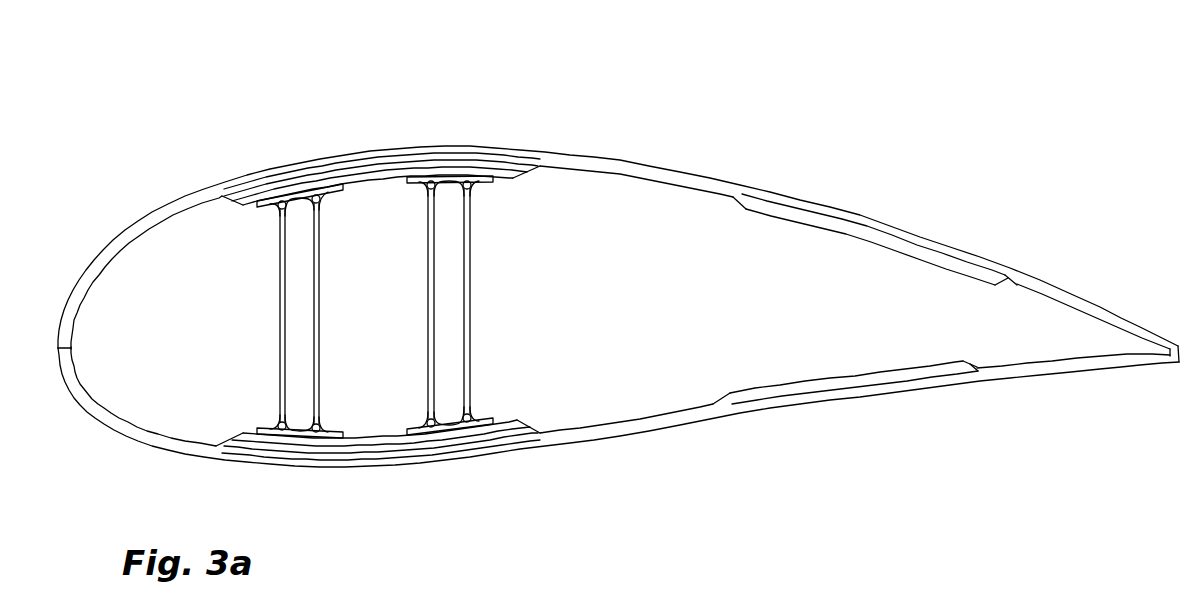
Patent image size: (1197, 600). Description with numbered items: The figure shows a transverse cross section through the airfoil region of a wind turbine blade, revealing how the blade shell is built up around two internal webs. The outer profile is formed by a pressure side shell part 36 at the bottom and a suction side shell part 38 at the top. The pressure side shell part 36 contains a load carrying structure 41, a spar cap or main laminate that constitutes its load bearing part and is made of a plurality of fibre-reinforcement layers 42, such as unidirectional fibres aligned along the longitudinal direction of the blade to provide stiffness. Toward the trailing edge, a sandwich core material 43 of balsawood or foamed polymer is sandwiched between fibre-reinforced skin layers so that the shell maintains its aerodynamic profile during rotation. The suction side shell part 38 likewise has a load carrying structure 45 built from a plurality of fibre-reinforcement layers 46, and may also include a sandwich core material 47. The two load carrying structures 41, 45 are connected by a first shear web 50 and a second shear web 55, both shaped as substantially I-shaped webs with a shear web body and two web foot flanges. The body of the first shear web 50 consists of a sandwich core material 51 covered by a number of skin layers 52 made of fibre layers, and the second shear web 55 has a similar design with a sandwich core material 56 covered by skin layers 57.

The pressure side shell part 36 is at (682, 428).
The suction side shell part 38 is at (663, 167).
The load carrying structure 41 is at (480, 452).
The fibre-reinforcement layers 42 is at (402, 457).
The sandwich core material 43 is at (863, 386).
The load carrying structure 45 is at (338, 152).
The fibre-reinforcement layers 46 is at (468, 168).
The sandwich core material 47 is at (857, 232).
The first shear web 50 is at (322, 311).
The sandwich core material 51 is at (310, 340).
The skin layers 52 is at (318, 249).
The second shear web 55 is at (482, 305).
The sandwich core material 56 is at (462, 332).
The skin layers 57 is at (470, 262).